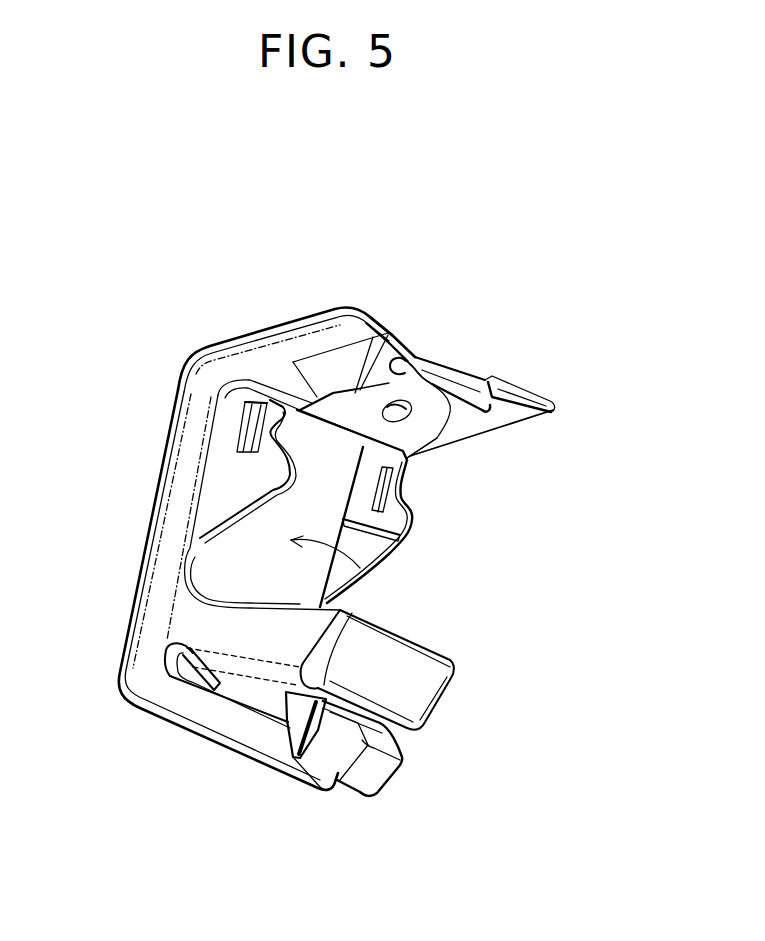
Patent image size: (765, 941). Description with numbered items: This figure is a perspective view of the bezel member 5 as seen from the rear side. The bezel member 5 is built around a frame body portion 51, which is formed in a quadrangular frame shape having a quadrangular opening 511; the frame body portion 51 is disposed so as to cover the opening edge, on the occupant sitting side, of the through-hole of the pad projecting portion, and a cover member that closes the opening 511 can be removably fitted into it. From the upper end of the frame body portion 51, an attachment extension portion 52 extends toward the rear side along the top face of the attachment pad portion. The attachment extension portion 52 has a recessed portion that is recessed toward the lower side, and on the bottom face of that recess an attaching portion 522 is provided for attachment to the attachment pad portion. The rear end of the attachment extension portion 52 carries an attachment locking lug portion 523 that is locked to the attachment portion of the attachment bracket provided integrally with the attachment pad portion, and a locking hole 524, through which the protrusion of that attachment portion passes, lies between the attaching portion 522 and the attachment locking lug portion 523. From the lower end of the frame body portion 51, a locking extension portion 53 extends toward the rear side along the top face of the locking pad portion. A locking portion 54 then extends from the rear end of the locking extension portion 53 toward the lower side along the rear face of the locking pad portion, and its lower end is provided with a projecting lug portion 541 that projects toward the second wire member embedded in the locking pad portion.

The bezel member 5 is at (133, 296).
The frame body portion 51 is at (178, 494).
The opening 511 is at (365, 572).
The attachment extension portion 52 is at (417, 350).
The attaching portion 522 is at (415, 433).
The attachment locking lug portion 523 is at (451, 386).
The locking hole 524 is at (393, 376).
The locking extension portion 53 is at (257, 637).
The locking portion 54 is at (363, 780).
The projecting lug portion 541 is at (292, 756).